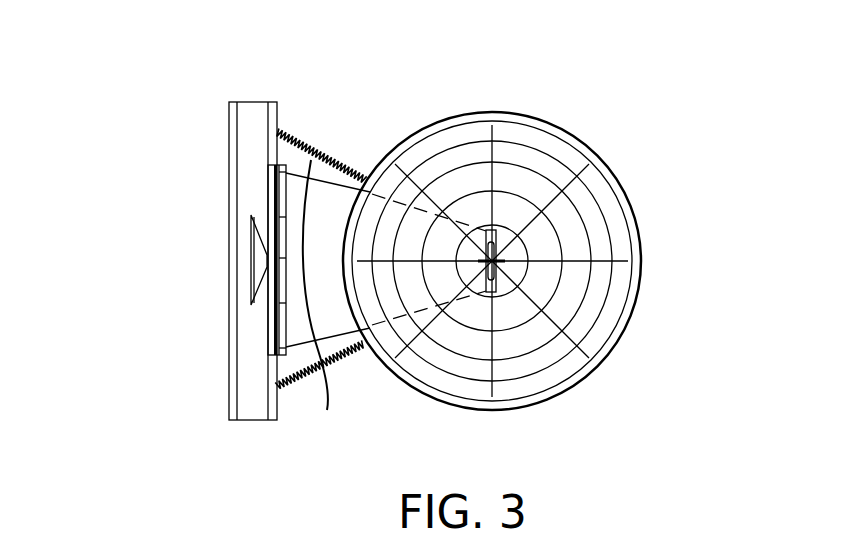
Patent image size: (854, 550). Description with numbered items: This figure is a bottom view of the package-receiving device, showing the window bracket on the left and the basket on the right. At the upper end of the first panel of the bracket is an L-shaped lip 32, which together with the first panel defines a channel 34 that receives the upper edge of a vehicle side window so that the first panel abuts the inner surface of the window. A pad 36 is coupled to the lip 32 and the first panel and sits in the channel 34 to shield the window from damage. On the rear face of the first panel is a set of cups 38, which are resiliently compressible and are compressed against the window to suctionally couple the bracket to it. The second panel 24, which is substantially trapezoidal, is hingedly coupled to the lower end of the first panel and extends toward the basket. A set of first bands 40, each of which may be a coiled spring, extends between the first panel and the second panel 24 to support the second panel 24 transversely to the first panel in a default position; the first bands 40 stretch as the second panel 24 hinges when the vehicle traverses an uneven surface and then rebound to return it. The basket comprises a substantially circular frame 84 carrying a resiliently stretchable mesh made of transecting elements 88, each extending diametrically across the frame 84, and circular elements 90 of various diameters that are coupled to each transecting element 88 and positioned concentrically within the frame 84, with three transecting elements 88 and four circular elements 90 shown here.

The second panel 24 is at (333, 230).
The lip 32 is at (231, 257).
The channel 34 is at (250, 122).
The pad 36 is at (238, 207).
The cups 38 is at (260, 267).
The first bands 40 is at (345, 355).
The frame 84 is at (572, 143).
The transecting elements 88 is at (490, 185).
The circular elements 90 is at (547, 293).